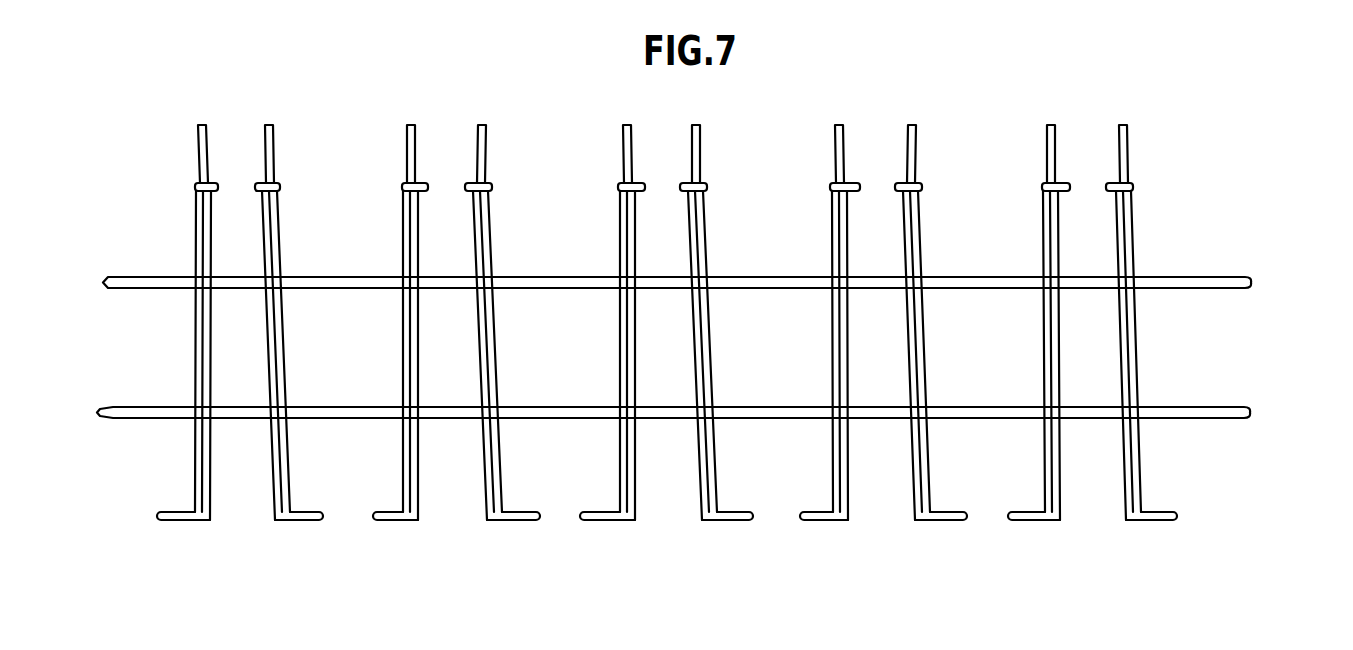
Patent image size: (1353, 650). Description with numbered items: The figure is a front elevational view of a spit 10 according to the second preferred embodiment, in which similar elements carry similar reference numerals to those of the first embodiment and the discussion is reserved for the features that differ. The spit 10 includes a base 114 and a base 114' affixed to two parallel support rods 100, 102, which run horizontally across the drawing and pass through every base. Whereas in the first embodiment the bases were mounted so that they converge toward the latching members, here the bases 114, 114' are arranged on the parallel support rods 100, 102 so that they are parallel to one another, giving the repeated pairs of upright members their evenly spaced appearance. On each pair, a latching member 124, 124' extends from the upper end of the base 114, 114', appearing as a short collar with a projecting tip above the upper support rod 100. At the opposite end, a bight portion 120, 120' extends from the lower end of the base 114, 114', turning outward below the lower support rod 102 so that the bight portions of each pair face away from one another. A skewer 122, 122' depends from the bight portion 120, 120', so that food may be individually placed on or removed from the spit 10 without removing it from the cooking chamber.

The spit 10 is at (1233, 140).
The support rod 100 is at (1247, 279).
The support rod 102 is at (1248, 412).
The base 114 is at (160, 345).
The base 114' is at (323, 346).
The latching member 124 is at (177, 170).
The latching member 124' is at (305, 167).
The skewer 122 is at (167, 355).
The skewer 122' is at (311, 355).
The bight portion 120 is at (156, 538).
The bight portion 120' is at (333, 540).